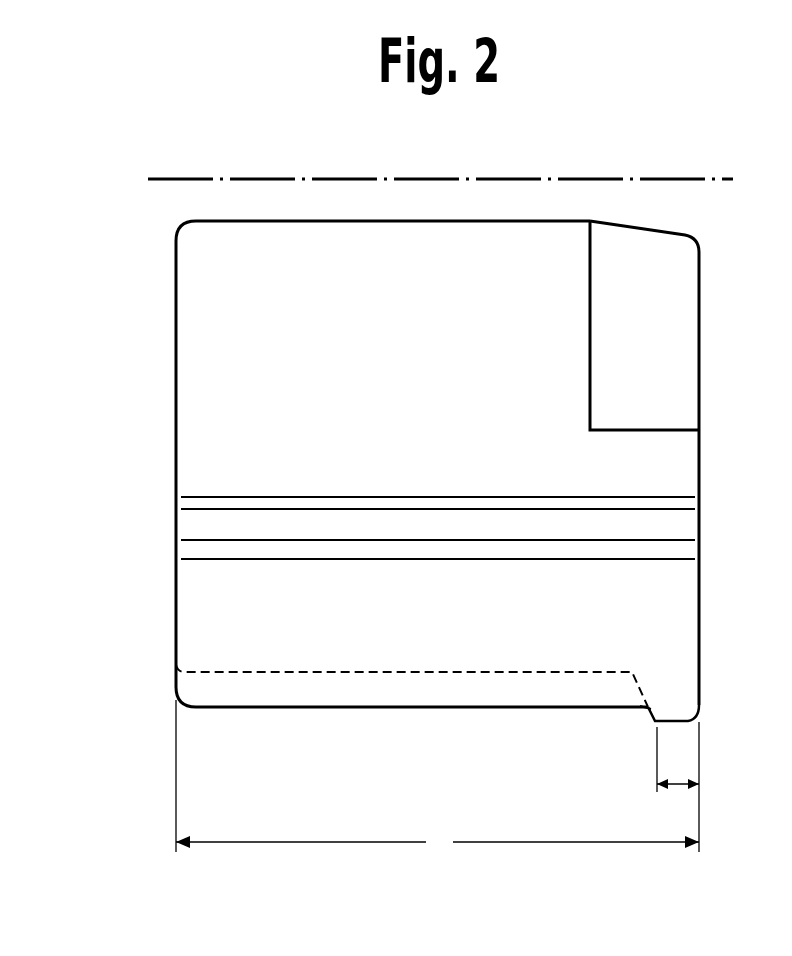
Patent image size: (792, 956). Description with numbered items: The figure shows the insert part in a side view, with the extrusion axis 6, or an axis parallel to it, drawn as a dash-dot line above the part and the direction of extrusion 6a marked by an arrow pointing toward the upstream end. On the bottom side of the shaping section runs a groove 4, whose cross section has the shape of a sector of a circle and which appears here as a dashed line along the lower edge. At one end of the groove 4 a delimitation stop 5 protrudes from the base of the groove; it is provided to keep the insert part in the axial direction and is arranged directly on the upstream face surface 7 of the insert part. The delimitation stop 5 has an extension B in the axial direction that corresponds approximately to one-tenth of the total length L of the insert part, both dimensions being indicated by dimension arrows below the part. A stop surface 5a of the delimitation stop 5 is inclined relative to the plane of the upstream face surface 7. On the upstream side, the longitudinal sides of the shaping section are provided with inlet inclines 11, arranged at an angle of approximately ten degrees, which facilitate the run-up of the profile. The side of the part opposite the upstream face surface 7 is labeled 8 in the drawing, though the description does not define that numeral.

The groove 4 is at (380, 680).
The delimitation stop 5 is at (690, 719).
The stop surface 5a is at (650, 712).
The extrusion axis 6 is at (677, 177).
The direction of extrusion 6a is at (350, 373).
The upstream face surface 7 is at (700, 452).
The rear wall 8 is at (176, 408).
The inlet inclines 11 is at (655, 313).
The total length L is at (437, 782).
The extension B is at (678, 788).